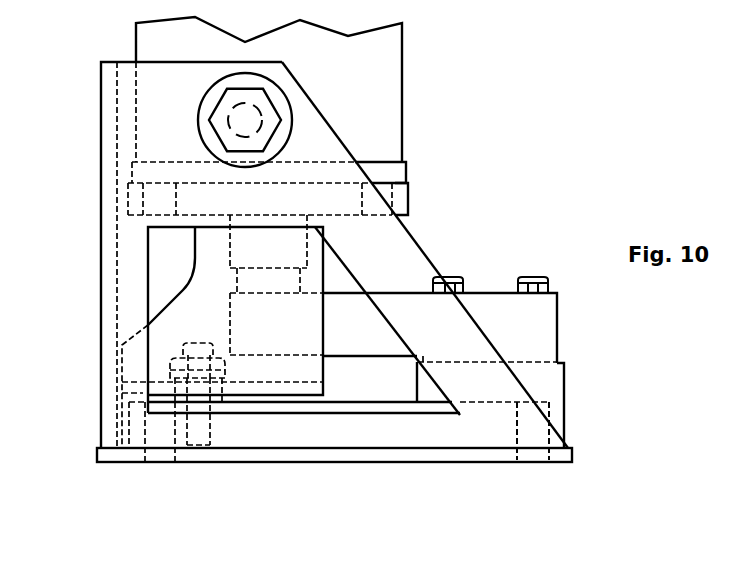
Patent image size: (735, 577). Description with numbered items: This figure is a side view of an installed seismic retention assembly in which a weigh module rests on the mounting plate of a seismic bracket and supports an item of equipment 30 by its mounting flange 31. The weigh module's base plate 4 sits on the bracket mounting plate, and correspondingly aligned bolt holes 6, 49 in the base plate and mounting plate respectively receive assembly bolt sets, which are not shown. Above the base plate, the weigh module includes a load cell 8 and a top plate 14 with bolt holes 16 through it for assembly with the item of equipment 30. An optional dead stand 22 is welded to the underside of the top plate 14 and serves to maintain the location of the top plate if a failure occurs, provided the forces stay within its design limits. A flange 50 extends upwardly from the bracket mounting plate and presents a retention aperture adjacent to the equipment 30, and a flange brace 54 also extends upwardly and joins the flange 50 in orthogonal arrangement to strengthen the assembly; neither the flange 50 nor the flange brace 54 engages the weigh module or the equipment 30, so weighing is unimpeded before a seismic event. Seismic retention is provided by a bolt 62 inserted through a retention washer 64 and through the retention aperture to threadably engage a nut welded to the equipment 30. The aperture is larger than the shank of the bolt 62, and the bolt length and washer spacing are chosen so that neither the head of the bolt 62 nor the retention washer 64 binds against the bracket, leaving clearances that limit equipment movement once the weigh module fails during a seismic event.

The base plate 4 is at (565, 427).
The bolt holes 6 is at (517, 426).
The load cell 8 is at (557, 306).
The top plate 14 is at (409, 200).
The bolt holes 16 is at (176, 206).
The dead stand 22 is at (195, 256).
The item of equipment 30 is at (402, 80).
The mounting flange 31 is at (408, 172).
The bolt holes 49 is at (522, 460).
The flange 50 is at (425, 253).
The flange brace 54 is at (117, 287).
The bolt 62 is at (223, 97).
The retention washer 64 is at (199, 117).